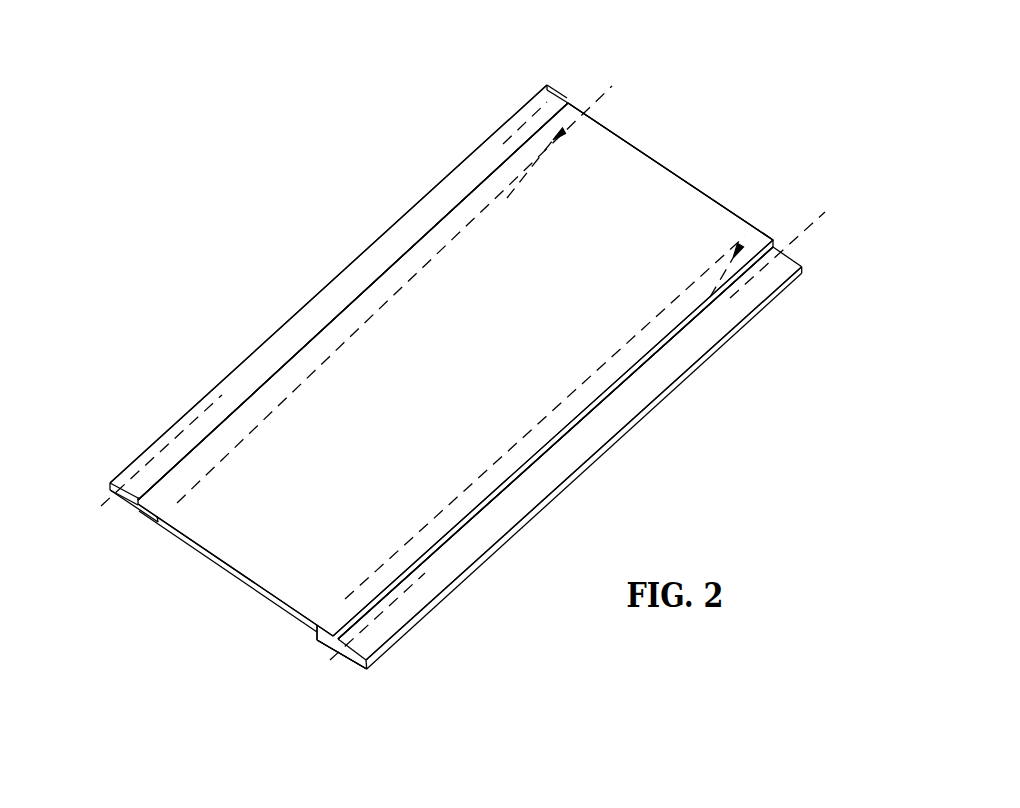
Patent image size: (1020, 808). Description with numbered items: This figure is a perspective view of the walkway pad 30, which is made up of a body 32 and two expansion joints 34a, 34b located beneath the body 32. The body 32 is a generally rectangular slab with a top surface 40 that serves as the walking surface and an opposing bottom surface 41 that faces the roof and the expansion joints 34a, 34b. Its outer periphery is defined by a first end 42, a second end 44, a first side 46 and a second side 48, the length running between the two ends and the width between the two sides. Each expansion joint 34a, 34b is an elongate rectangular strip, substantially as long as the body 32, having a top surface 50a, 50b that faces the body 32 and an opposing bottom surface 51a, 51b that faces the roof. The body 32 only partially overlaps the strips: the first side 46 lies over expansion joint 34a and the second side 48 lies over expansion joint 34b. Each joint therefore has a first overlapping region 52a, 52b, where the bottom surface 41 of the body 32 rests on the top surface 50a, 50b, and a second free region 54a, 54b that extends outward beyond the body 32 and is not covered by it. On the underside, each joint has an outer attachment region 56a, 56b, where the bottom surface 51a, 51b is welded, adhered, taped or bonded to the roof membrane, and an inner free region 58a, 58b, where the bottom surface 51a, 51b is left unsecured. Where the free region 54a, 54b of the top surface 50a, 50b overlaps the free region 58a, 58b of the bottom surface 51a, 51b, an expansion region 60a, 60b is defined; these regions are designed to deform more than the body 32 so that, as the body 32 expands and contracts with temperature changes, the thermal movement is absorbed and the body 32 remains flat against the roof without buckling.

The walkway pad 30 is at (727, 49).
The body 32 is at (684, 200).
The expansion joint 34a is at (393, 232).
The expansion joint 34b is at (625, 442).
The top surface 40 is at (467, 365).
The bottom surface 41 is at (258, 606).
The first end 42 is at (656, 146).
The second end 44 is at (237, 572).
The first side 46 is at (335, 316).
The second side 48 is at (537, 468).
The top surface 50a is at (216, 393).
The top surface 50b is at (438, 578).
The bottom surface 51a is at (157, 524).
The bottom surface 51b is at (384, 655).
The first overlapping region 52a is at (612, 86).
The first overlapping region 52b is at (740, 245).
The second free region 54a is at (458, 176).
The second free region 54b is at (661, 402).
The outer attachment region 56a is at (90, 510).
The outer attachment region 56b is at (364, 698).
The inner free region 58a is at (129, 531).
The inner free region 58b is at (308, 668).
The expansion region 60a is at (558, 86).
The expansion region 60b is at (578, 426).